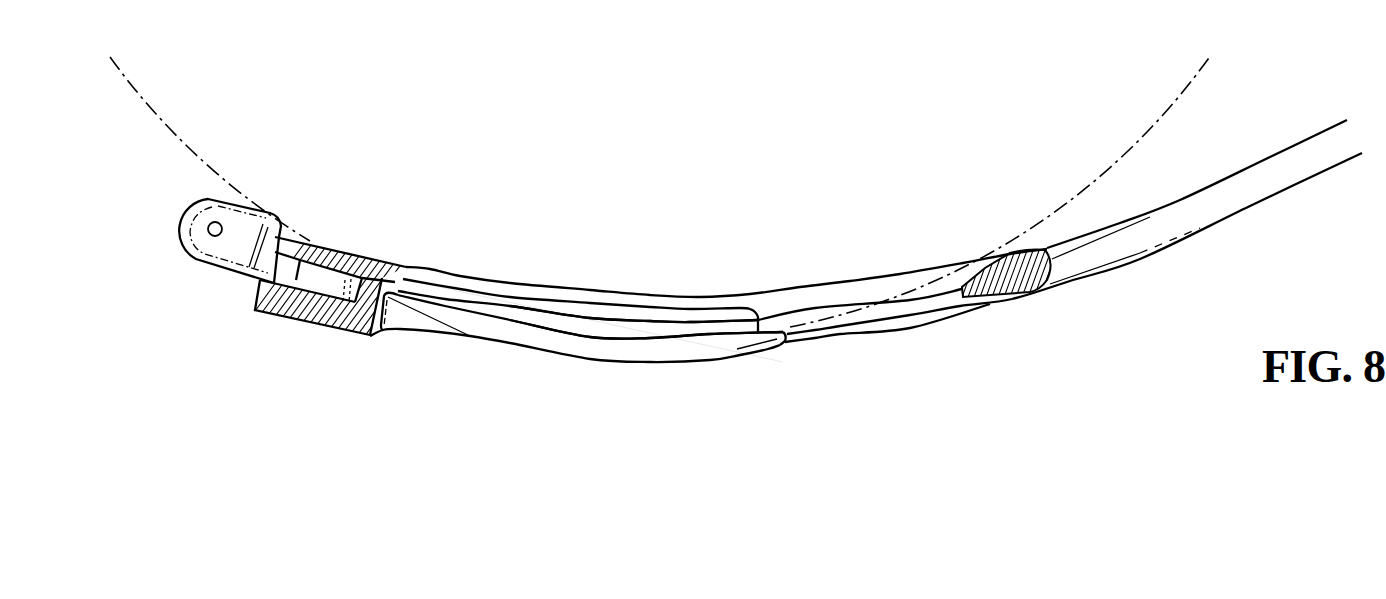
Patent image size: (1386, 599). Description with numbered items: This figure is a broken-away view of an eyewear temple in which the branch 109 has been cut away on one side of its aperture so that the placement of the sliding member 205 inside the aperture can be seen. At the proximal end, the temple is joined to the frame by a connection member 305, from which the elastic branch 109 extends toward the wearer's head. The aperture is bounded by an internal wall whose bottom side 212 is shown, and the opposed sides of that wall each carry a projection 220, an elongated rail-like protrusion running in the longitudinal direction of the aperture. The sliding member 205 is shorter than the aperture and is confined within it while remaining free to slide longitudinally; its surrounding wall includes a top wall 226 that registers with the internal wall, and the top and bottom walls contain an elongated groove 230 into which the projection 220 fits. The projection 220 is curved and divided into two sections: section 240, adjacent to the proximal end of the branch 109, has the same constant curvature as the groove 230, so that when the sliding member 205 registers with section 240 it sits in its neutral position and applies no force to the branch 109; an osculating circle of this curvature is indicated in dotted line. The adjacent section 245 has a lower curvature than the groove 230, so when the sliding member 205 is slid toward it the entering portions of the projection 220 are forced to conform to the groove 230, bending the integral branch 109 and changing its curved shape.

The branch 109 is at (1257, 185).
The sliding member 205 is at (448, 317).
The bottom side 212 is at (845, 295).
The projection 220 is at (773, 323).
The top wall 226 is at (678, 313).
The groove 230 is at (597, 325).
The section 240 is at (777, 370).
The section 245 is at (1025, 319).
The connection member 305 is at (238, 256).